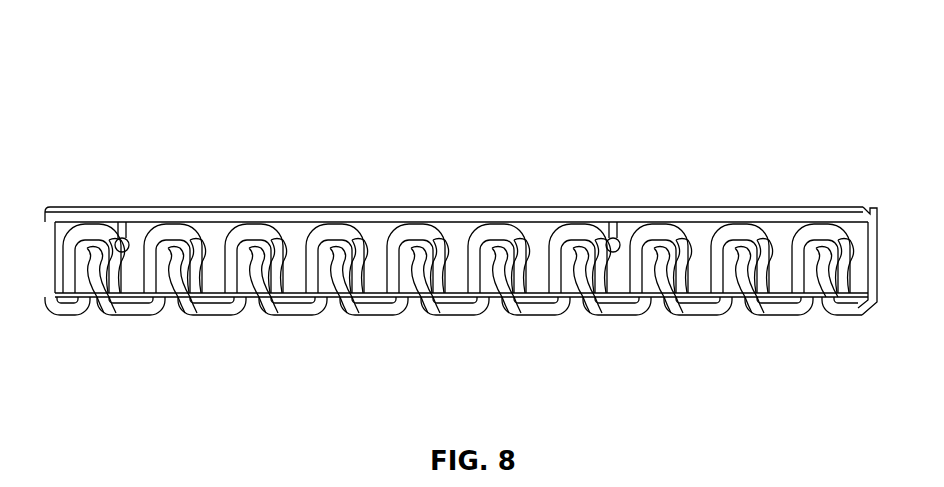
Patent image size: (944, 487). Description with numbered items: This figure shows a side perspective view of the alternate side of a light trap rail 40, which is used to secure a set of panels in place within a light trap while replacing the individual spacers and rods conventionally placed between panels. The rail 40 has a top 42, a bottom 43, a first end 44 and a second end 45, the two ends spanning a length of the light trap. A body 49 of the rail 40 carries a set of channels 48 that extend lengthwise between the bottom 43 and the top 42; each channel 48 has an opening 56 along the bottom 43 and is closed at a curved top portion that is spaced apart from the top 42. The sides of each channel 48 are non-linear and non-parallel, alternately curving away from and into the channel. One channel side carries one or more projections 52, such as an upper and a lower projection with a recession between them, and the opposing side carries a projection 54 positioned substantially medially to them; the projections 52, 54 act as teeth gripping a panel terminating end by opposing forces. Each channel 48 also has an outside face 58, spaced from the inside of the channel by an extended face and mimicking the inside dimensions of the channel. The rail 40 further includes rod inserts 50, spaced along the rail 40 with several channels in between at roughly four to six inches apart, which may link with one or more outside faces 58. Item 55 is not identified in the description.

The rail 40 is at (495, 102).
The top 42 is at (558, 207).
The bottom 43 is at (698, 317).
The first end 44 is at (885, 255).
The second end 45 is at (53, 270).
The channel 48 is at (248, 318).
The body 49 is at (537, 255).
The rod insert 50 is at (119, 237).
The projection 52 is at (170, 240).
The projection 54 is at (205, 235).
The link aperture 55 is at (405, 245).
The opening 56 is at (495, 310).
The outside face 58 is at (768, 242).